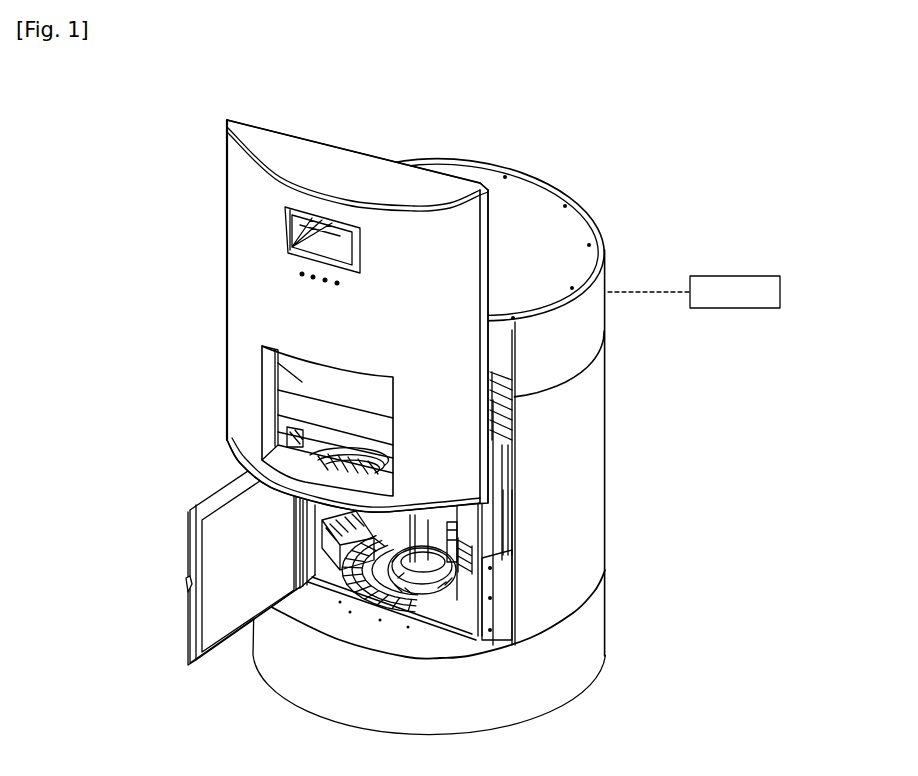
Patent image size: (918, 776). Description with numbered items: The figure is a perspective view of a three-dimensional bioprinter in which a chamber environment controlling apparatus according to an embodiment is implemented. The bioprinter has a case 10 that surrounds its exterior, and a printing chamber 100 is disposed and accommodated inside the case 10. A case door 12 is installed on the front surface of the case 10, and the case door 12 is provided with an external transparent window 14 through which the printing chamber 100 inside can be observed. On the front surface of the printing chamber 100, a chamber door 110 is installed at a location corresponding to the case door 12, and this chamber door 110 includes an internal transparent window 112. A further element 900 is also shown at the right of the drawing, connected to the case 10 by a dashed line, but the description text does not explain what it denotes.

The case 10 is at (608, 465).
The case door 12 is at (258, 286).
The external transparent window 14 is at (303, 383).
The printing chamber 100 is at (335, 588).
The chamber door 110 is at (177, 550).
The internal transparent window 112 is at (238, 578).
The remote terminal 900 is at (765, 280).